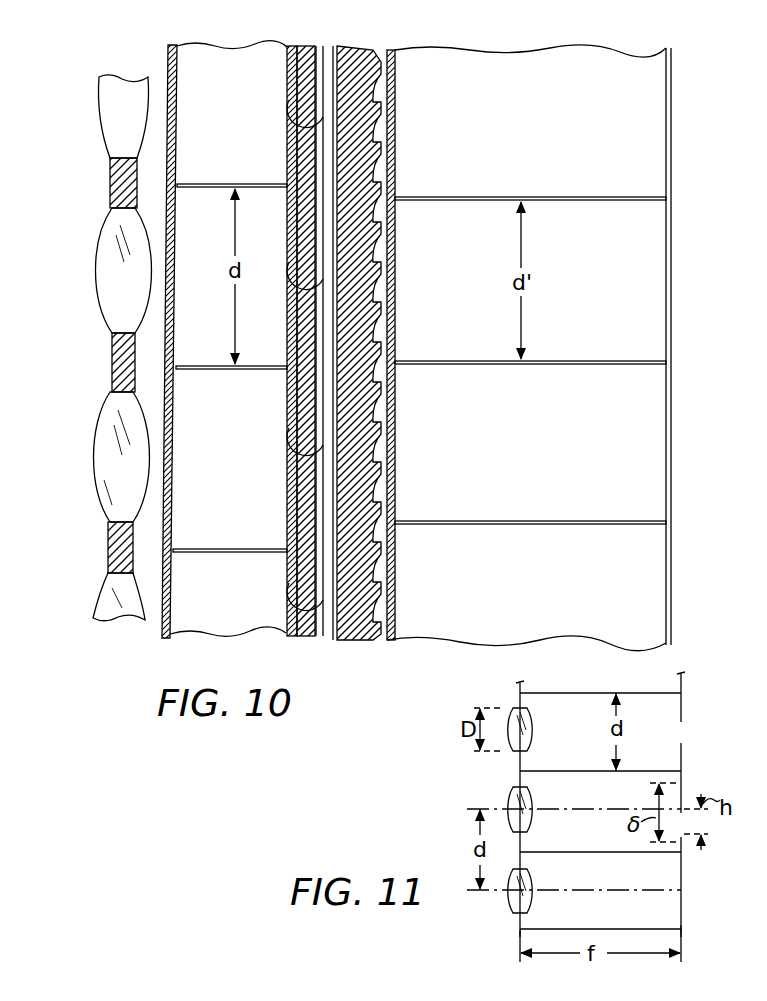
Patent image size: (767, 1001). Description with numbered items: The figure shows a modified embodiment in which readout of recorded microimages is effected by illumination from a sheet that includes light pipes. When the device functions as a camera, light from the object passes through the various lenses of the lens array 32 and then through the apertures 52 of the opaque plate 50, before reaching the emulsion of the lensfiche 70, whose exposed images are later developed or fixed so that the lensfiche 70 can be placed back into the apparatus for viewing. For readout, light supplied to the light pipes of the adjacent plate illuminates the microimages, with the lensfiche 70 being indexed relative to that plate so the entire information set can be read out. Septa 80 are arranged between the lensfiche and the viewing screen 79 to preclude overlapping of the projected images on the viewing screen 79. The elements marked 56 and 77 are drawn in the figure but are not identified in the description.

The lens array 32 is at (84, 574).
The opaque plate 50 is at (170, 521).
The apertures 52 is at (177, 95).
The partition 56 is at (252, 183).
The lensfiche 70 is at (344, 408).
The tube wall 77 is at (395, 236).
The viewing screen 79 is at (672, 432).
The septa 80 is at (561, 197).